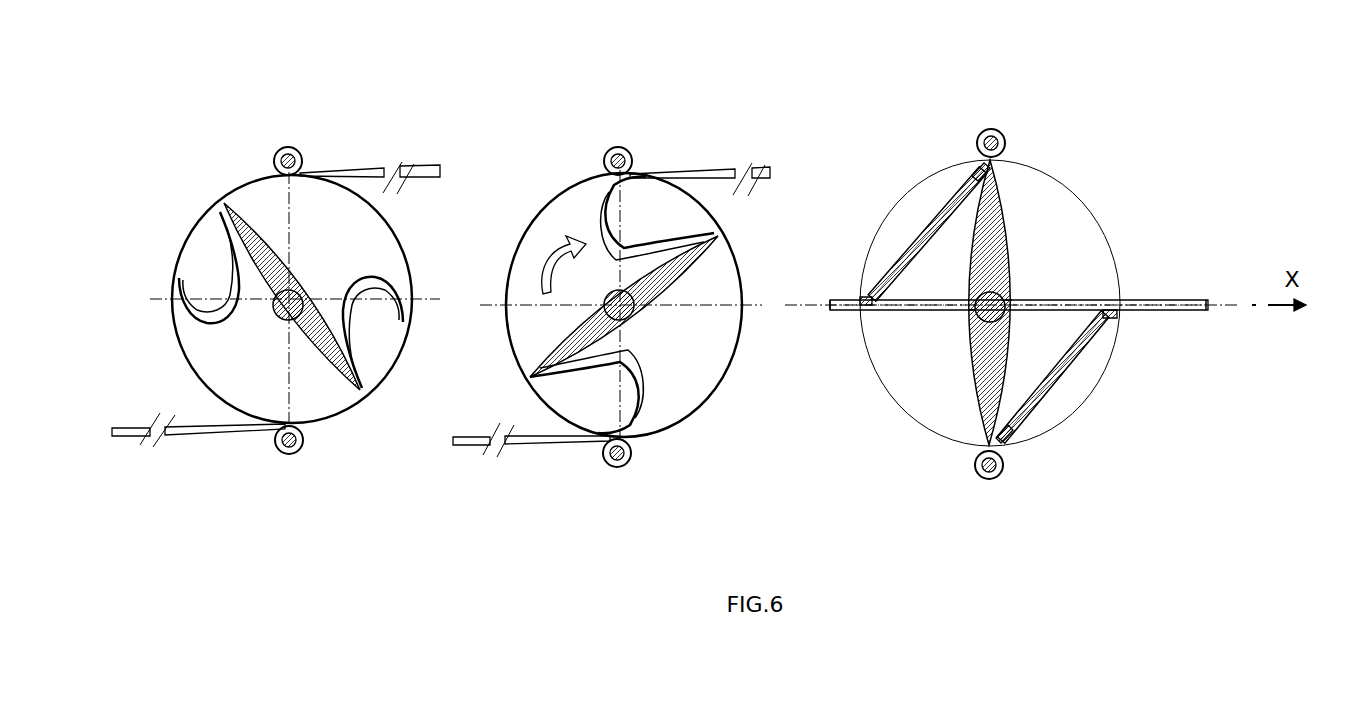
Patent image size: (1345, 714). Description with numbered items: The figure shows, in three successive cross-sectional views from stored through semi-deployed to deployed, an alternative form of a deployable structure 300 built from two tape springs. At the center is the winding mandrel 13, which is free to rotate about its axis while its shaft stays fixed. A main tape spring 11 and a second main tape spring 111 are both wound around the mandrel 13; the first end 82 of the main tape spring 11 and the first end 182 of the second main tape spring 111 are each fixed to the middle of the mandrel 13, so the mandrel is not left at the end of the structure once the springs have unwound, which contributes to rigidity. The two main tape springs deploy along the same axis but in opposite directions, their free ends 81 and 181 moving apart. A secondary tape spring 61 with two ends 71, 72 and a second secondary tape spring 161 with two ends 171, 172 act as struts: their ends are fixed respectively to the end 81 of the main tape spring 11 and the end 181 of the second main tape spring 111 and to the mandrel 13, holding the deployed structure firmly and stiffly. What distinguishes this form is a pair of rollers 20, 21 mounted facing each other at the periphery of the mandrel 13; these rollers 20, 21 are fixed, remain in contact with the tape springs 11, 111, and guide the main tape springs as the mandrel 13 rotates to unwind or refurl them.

The deployable structure 300 is at (274, 37).
The winding mandrel 13 is at (244, 200).
The roller 20 is at (294, 148).
The roller 21 is at (300, 456).
The main tape spring 11 is at (365, 166).
The second main tape spring 111 is at (203, 434).
The secondary tape spring 61 is at (232, 272).
The second secondary tape spring 161 is at (372, 340).
The end of secondary tape spring 71 is at (1108, 355).
The end of secondary tape spring 72 is at (1008, 434).
The end of second secondary tape spring 171 is at (840, 298).
The end of second secondary tape spring 172 is at (978, 166).
The end of main tape spring 81 is at (1210, 300).
The first end of main tape spring 82 is at (1012, 300).
The end of second main tape spring 181 is at (830, 312).
The first end of second main tape spring 182 is at (977, 312).